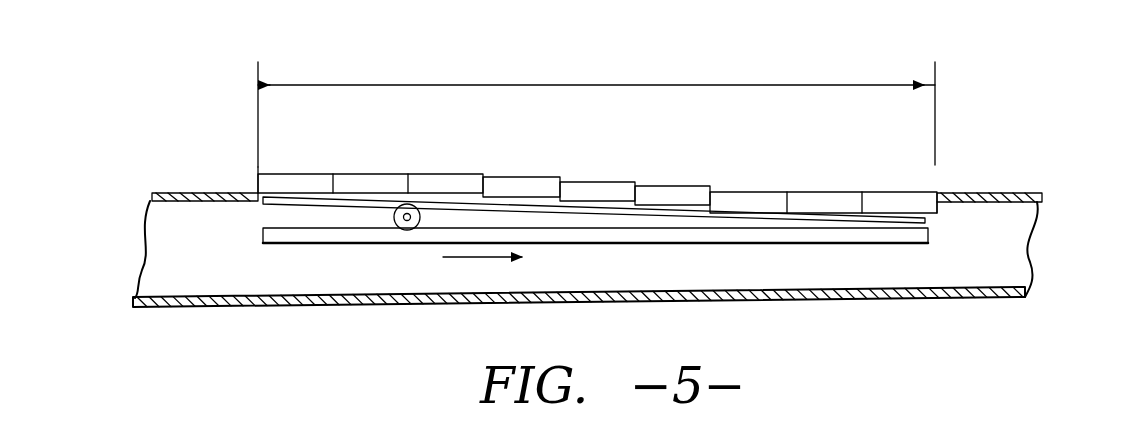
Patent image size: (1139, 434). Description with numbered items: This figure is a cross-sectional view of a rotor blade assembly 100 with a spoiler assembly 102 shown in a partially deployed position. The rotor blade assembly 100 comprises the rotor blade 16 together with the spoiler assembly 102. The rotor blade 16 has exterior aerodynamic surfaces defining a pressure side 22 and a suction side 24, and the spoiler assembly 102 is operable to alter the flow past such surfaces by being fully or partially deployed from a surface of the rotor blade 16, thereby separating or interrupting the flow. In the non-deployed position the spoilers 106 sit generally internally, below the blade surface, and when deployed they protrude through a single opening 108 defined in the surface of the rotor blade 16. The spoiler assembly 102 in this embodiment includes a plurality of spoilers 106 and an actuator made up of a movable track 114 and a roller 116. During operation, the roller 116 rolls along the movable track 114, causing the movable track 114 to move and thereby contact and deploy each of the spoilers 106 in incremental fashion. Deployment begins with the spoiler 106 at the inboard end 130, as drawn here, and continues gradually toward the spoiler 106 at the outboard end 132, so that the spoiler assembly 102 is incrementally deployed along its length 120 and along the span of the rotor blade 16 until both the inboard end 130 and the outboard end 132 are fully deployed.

The rotor blade 16 is at (1024, 186).
The pressure side 22 is at (217, 308).
The suction side 24 is at (177, 192).
The rotor blade assembly 100 is at (1042, 108).
The spoiler assembly 102 is at (543, 237).
The spoilers 106 is at (290, 180).
The opening 108 is at (258, 213).
The movable track 114 is at (317, 203).
The roller 116 is at (394, 217).
The length of the spoiler assembly 120 is at (603, 85).
The inboard end 130 is at (255, 183).
The outboard end 132 is at (937, 212).